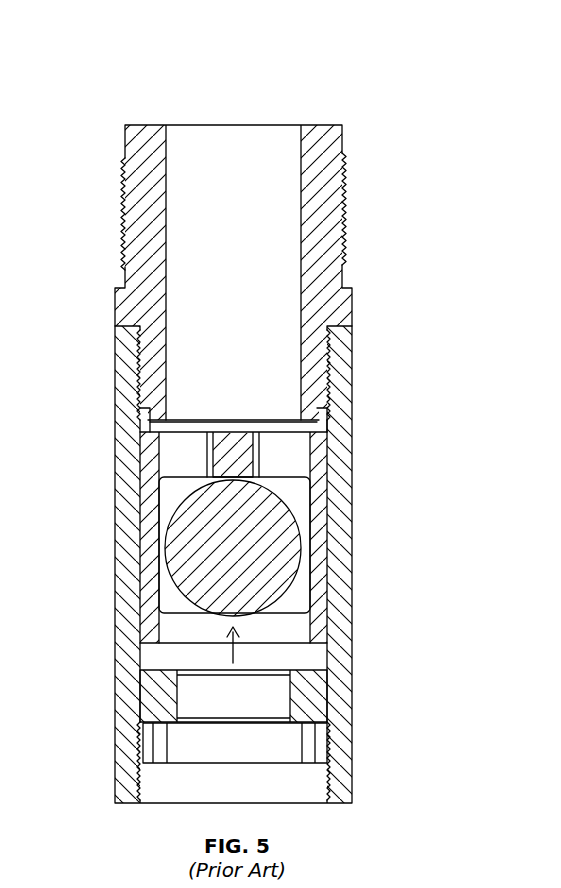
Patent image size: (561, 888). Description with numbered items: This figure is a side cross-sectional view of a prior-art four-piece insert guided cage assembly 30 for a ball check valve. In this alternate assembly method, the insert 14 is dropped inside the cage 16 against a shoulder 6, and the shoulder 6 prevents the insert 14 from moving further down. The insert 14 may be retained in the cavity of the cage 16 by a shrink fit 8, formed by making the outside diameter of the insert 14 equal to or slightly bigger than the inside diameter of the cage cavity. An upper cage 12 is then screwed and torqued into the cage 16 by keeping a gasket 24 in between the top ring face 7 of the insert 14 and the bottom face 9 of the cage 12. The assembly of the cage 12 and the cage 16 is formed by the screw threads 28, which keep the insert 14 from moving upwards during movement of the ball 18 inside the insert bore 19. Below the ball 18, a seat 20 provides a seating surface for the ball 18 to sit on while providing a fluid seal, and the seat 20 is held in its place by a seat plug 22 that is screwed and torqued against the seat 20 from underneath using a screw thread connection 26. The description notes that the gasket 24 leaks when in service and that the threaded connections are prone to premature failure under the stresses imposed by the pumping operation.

The check valve assembly 30 is at (328, 51).
The cage 12 is at (334, 204).
The screw threads 28 is at (332, 373).
The gasket 24 is at (329, 424).
The bottom face 9 is at (302, 408).
The top ring face 7 is at (320, 448).
The insert 14 is at (328, 506).
The cage 16 is at (339, 546).
The shrink fit 8 is at (326, 612).
The shoulder 6 is at (328, 640).
The ball 18 is at (190, 530).
The insert bore 19 is at (233, 663).
The seat 20 is at (308, 703).
The seat plug 22 is at (317, 757).
The screw thread connection 26 is at (330, 770).